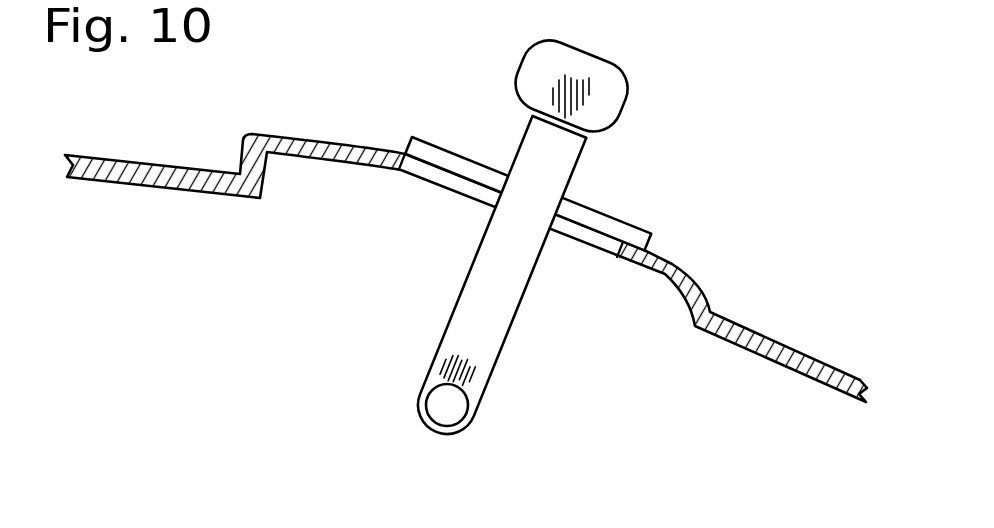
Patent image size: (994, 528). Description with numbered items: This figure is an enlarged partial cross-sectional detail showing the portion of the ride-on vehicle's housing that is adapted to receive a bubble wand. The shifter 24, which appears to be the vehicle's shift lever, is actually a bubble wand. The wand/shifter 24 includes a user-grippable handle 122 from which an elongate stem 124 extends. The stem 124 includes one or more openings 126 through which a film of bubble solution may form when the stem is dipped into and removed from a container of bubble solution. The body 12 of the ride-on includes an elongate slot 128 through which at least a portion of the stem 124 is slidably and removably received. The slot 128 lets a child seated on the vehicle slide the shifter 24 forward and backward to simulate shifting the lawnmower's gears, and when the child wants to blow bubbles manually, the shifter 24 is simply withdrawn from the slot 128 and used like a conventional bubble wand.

The body 12 is at (690, 277).
The shifter 24 is at (514, 222).
The user-grippable handle 122 is at (605, 52).
The elongate stem 124 is at (507, 340).
The opening 126 is at (420, 402).
The elongate slot 128 is at (575, 228).